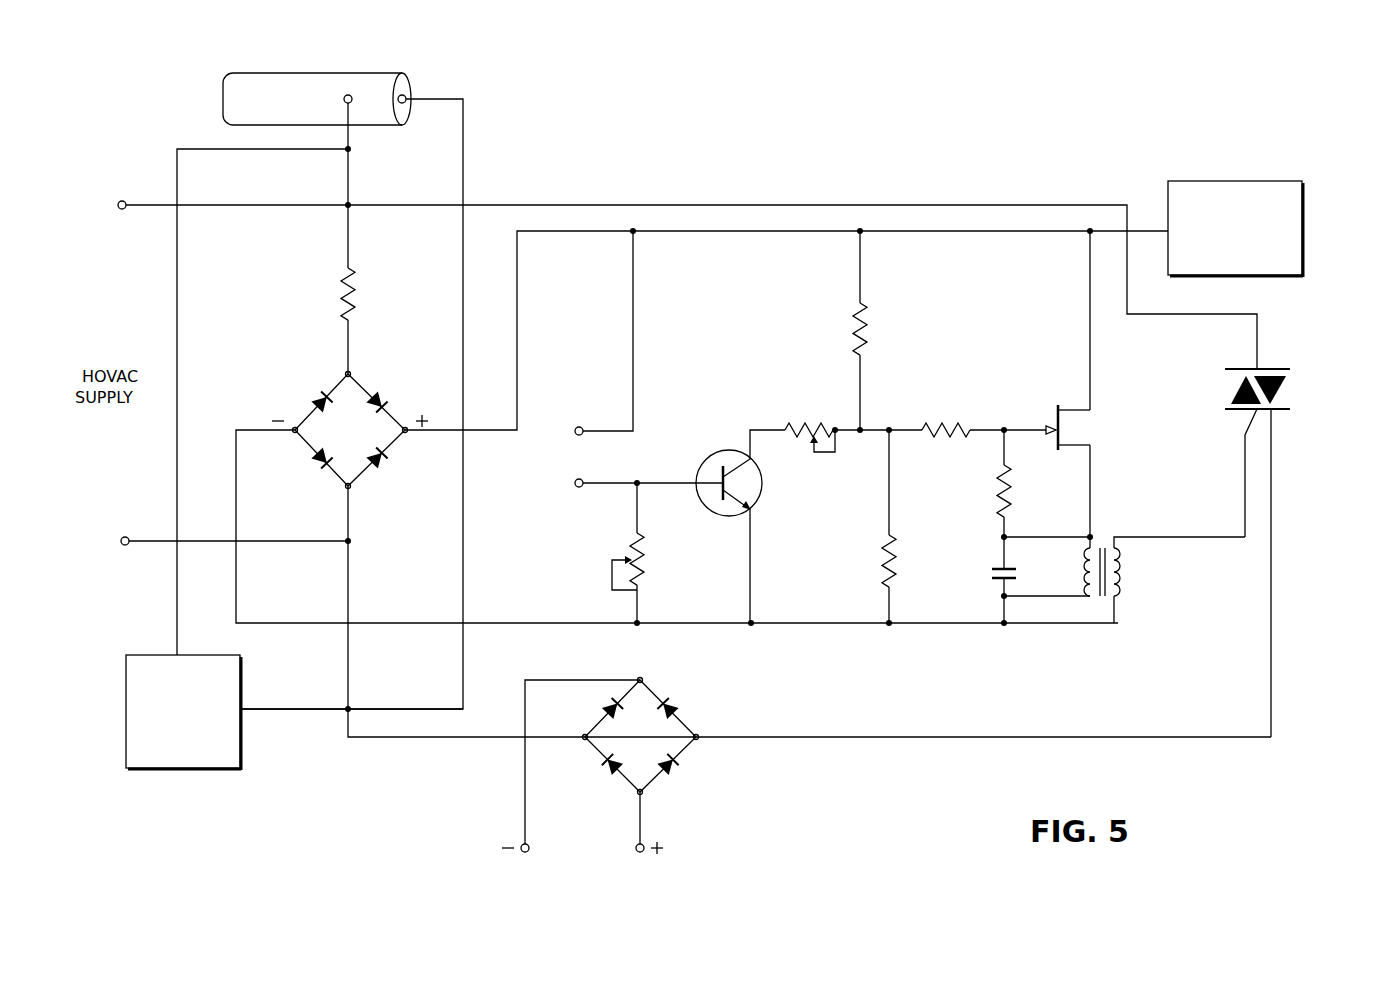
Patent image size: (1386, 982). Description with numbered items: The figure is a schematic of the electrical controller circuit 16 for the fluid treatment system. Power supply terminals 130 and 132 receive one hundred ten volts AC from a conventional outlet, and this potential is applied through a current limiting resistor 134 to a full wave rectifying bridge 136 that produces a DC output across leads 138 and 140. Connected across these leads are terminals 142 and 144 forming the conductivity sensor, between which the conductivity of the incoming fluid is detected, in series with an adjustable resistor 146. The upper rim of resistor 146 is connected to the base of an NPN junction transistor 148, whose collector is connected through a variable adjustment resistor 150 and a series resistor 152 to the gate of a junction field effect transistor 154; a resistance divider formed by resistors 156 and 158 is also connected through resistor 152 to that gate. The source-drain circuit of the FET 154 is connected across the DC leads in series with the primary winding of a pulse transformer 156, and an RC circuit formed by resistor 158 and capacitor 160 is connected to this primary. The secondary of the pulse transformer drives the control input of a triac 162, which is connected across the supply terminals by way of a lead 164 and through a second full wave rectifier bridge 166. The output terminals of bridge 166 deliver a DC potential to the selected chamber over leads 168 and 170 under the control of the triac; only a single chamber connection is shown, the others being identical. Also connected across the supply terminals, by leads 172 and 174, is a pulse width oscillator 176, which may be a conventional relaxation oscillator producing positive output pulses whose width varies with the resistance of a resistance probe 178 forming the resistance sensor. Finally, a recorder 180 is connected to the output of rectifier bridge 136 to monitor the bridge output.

The control circuit 16 is at (807, 178).
The power supply terminal 130 is at (121, 201).
The input terminal 132 is at (128, 545).
The current limiting resistor 134 is at (346, 281).
The full wave rectifying bridge 136 is at (324, 396).
The lead 138 is at (517, 280).
The lead 140 is at (322, 623).
The terminal 142 is at (590, 401).
The terminal 144 is at (580, 488).
The adjustable resistor 146 is at (643, 560).
The NPN junction transistor 148 is at (732, 444).
The variable adjustment resistor 150 is at (804, 429).
The series resistor 152 is at (957, 425).
The junction field effect transistor 154 is at (1066, 371).
The resistor / pulse transformer 156 is at (868, 328).
The resistor 158 is at (887, 562).
The capacitor 160 is at (995, 573).
The triac 162 is at (1278, 368).
The lead 164 is at (949, 203).
The second full wave rectifier bridge 166 is at (694, 708).
The lead 168 is at (525, 793).
The lead 170 is at (640, 829).
The lead 172 is at (189, 147).
The lead 174 is at (325, 709).
The pulse width oscillator 176 is at (240, 768).
The resistance probe 178 is at (389, 74).
The recorder 180 is at (1196, 181).